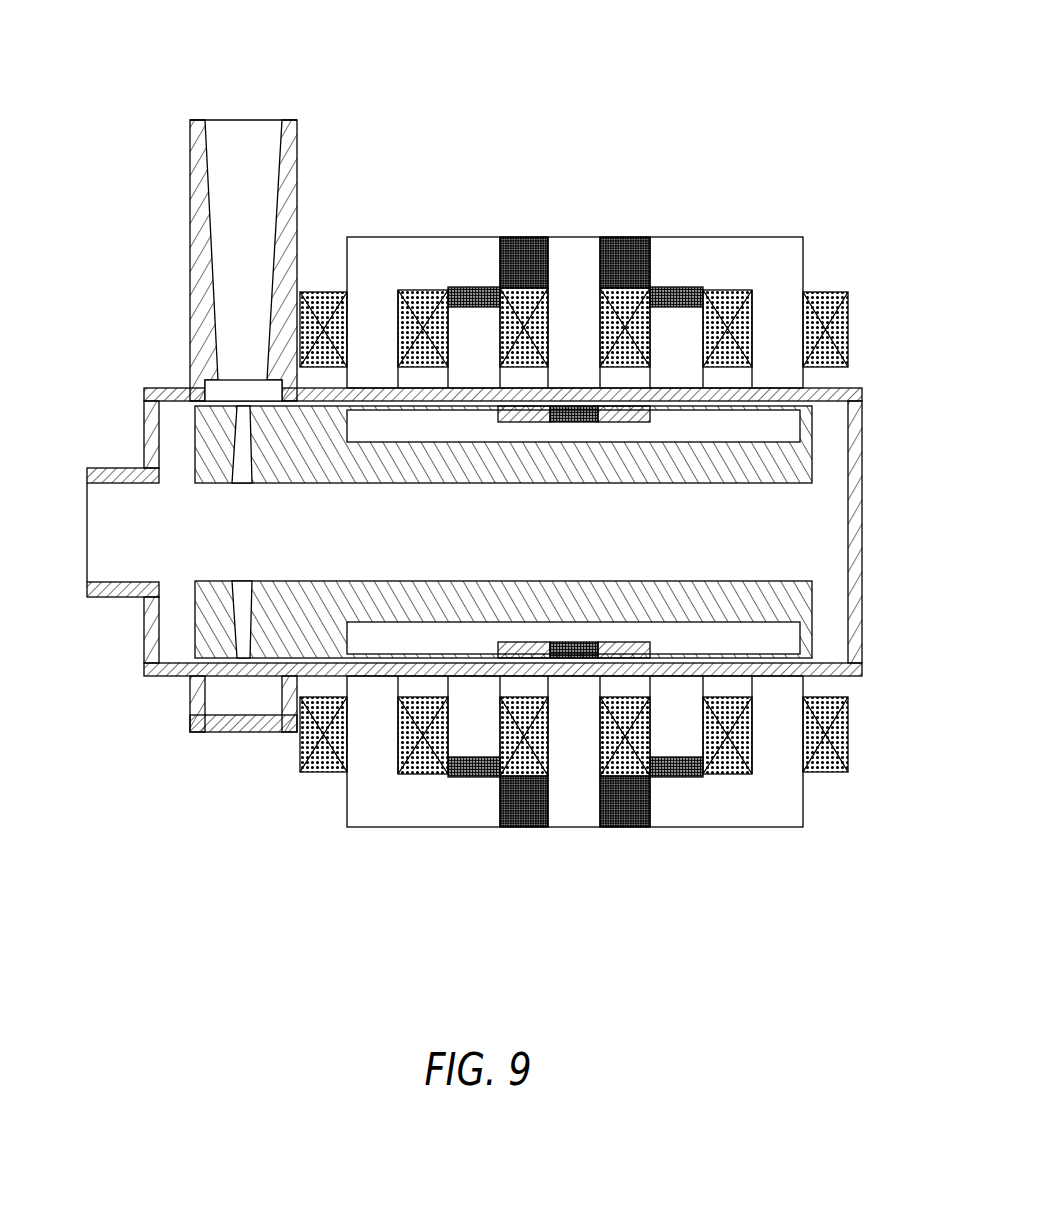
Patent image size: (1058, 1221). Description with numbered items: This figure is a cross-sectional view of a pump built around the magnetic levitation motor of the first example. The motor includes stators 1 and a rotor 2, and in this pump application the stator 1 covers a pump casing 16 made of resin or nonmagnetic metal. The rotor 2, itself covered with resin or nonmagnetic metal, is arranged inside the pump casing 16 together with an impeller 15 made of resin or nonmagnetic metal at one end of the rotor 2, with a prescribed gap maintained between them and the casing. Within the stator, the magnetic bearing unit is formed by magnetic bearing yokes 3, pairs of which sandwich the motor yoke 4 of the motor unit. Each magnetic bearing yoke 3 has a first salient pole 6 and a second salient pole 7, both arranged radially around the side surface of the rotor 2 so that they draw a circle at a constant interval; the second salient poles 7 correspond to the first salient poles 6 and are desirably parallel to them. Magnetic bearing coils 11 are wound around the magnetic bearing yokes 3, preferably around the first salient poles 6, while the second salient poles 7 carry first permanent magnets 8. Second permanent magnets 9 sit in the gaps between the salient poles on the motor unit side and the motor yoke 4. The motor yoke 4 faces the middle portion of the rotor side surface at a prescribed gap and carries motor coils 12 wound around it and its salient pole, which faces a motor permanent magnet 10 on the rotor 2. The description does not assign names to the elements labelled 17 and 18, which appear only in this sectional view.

The stator 1 is at (473, 514).
The rotor 2 is at (783, 430).
The magnetic bearing yoke 3 is at (370, 237).
The motor yoke 4 is at (558, 247).
The first salient pole 6 is at (388, 340).
The second salient pole 7 is at (463, 327).
The first permanent magnet 8 is at (488, 287).
The second permanent magnet 9 is at (520, 283).
The motor permanent magnet 10 is at (583, 413).
The magnetic bearing coil 11 is at (332, 292).
The motor coil 12 is at (519, 288).
The impeller 15 is at (213, 453).
The pump casing 16 is at (145, 413).
The shaft sleeve 17 is at (87, 535).
The pipe 18 is at (240, 118).